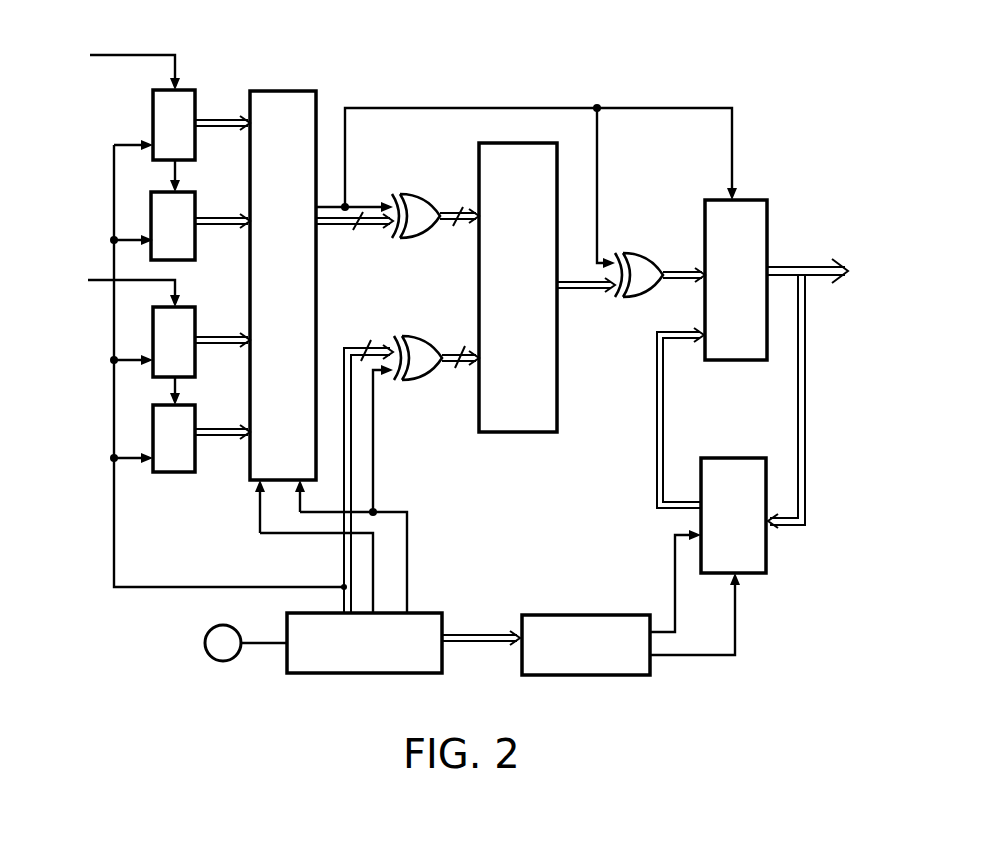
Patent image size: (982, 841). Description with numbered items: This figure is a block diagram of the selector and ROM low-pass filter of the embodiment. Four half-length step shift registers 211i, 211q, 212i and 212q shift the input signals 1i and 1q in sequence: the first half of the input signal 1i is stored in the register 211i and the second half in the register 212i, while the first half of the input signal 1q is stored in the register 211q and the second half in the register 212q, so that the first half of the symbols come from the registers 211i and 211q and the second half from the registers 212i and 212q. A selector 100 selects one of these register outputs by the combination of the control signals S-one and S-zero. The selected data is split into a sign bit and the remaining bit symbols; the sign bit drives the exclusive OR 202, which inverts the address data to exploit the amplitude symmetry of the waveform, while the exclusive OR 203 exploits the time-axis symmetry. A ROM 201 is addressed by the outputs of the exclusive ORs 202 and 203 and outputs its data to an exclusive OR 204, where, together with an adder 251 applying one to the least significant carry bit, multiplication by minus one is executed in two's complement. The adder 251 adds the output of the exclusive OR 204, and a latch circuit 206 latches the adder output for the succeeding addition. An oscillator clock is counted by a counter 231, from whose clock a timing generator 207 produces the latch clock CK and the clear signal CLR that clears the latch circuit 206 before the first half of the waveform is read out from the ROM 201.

The input signal 1i is at (112, 55).
The input signal 1q is at (102, 280).
The n/2 step shift register 212i is at (187, 88).
The n/2 step shift register 211i is at (151, 200).
The n/2 step shift register 212q is at (150, 375).
The n/2 step shift register 211q is at (173, 473).
The selector 100 is at (275, 88).
The exclusive OR 202 is at (418, 195).
The exclusive OR 203 is at (418, 382).
The exclusive OR 204 is at (633, 253).
The ROM 201 is at (505, 432).
The adder 251 is at (745, 198).
The latch circuit 206 is at (750, 577).
The timing generator 207 is at (540, 615).
The counter 231 is at (420, 613).